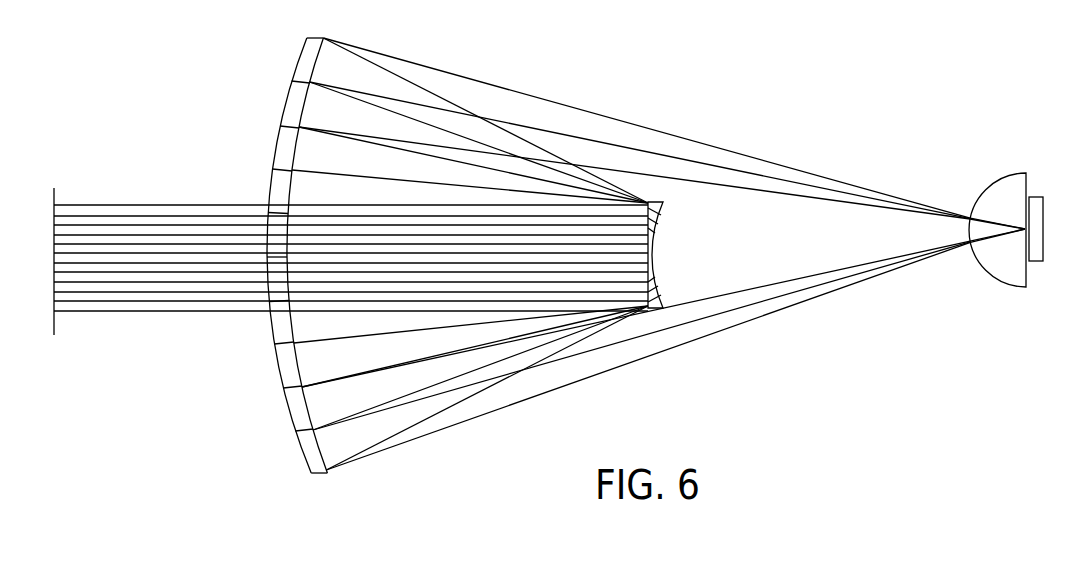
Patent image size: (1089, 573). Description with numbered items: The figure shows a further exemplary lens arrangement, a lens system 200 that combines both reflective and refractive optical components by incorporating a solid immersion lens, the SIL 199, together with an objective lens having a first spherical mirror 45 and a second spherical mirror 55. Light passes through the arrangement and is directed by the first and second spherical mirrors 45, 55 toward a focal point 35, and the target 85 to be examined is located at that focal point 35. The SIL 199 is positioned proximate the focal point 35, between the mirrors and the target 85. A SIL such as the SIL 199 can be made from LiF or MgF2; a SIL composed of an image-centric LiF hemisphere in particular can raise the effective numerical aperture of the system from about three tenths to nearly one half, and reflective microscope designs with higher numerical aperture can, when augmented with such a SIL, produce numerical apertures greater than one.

The first spherical mirror 45 is at (262, 378).
The second spherical mirror 55 is at (659, 262).
The lens system 200 is at (716, 364).
The focal point 35 is at (1008, 210).
The target 85 is at (1036, 264).
The solid immersion lens 199 is at (989, 270).